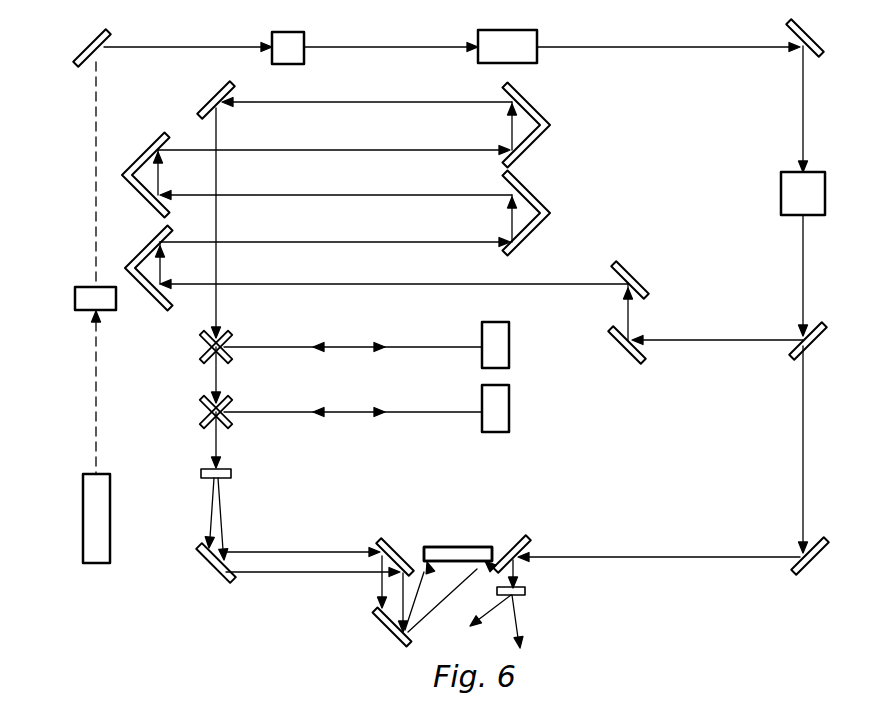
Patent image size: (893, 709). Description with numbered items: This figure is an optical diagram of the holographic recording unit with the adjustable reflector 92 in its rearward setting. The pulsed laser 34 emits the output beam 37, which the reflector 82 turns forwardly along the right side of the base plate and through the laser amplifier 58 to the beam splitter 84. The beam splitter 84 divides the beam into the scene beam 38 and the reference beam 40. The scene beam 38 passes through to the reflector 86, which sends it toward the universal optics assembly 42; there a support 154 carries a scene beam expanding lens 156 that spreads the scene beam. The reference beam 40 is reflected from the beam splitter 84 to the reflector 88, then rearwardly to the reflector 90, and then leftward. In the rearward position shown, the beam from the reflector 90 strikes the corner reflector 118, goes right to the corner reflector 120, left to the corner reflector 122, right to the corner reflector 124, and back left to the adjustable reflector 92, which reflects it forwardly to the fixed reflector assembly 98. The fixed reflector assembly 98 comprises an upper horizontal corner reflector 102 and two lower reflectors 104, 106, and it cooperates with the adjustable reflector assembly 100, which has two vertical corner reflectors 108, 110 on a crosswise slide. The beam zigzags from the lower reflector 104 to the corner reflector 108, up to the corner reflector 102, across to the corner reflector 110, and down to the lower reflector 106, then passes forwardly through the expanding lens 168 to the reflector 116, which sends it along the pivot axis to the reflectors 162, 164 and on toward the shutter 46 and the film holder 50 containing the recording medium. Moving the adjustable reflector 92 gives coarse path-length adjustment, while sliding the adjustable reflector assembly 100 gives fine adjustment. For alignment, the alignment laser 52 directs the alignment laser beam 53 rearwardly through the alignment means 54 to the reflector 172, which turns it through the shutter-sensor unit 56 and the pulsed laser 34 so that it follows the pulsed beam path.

The reflector 172 is at (78, 51).
The shutter-sensor unit 56 is at (290, 66).
The pulsed laser 34 is at (488, 64).
The pulsed laser output beam 37 is at (658, 48).
The reflector 82 is at (823, 45).
The laser amplifier 58 is at (826, 192).
The beam splitter 84 is at (825, 342).
The reflector 86 is at (822, 556).
The scene beam 38 is at (651, 557).
The support 154 is at (530, 544).
The scene beam expanding lens 156 is at (528, 591).
The adjustable reflector 92 is at (206, 98).
The corner reflector 124 is at (540, 112).
The corner reflector 122 is at (162, 142).
The corner reflector 120 is at (540, 200).
The corner reflector 118 is at (160, 242).
The reflector 90 is at (638, 273).
The reflector 88 is at (620, 349).
The reference beam 40 is at (715, 340).
The lower reflector 104 is at (200, 346).
The lower reflector 106 is at (200, 416).
The upper horizontal corner reflector 102 is at (215, 376).
The fixed reflector assembly 98 is at (246, 383).
The adjustable reflector assembly 100 is at (522, 377).
The vertical corner reflector 108 is at (510, 330).
The vertical corner reflector 110 is at (510, 420).
The alignment means 54 is at (75, 297).
The alignment laser beam 53 is at (95, 388).
The alignment laser 52 is at (83, 517).
The expanding lens 168 is at (202, 473).
The reflector 116 is at (200, 558).
The reflector 162 is at (385, 545).
The reflector 164 is at (380, 626).
The universal optics assembly 42 is at (436, 514).
The shutter 46 is at (460, 536).
The film holder 50 is at (478, 530).